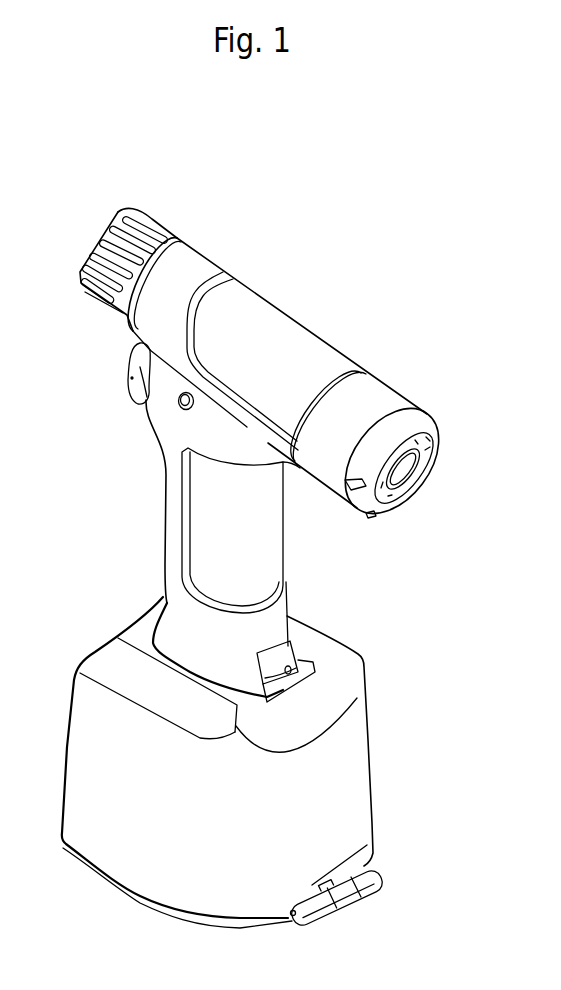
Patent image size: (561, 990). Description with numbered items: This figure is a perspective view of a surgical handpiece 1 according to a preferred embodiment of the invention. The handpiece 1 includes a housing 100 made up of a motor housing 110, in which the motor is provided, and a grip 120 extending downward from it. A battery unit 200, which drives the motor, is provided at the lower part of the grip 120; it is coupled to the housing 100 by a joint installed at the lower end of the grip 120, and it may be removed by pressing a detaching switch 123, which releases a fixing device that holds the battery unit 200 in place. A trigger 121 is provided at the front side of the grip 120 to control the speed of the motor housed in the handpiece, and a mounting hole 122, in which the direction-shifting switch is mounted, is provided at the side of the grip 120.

The handpiece 1 is at (25, 213).
The housing 100 is at (293, 307).
The motor housing 110 is at (371, 371).
The grip 120 is at (273, 554).
The trigger 121 is at (137, 367).
The mounting hole 122 is at (180, 408).
The detaching switch 123 is at (299, 661).
The battery unit 200 is at (381, 740).